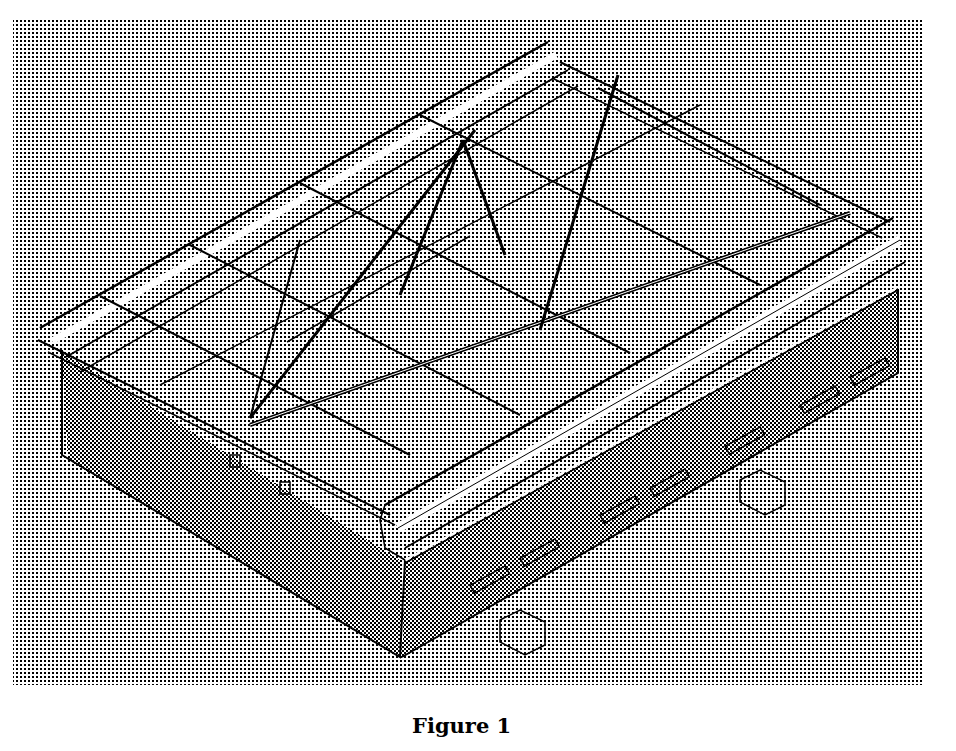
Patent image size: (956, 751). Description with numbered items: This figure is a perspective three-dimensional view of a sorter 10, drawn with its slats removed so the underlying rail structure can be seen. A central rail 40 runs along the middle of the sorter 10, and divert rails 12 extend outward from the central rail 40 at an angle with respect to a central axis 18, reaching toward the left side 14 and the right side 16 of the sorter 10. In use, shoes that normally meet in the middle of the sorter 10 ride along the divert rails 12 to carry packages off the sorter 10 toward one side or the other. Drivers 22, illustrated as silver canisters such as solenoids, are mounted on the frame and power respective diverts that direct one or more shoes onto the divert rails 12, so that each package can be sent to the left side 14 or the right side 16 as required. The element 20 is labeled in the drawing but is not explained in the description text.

The rack assembly 10 is at (108, 118).
The frame members 12 is at (287, 342).
The rear rail 14 is at (290, 182).
The front rail 16 is at (850, 247).
The cross beam 18 is at (745, 150).
The diagonal brace 20 is at (246, 412).
The mounting brackets 22 is at (236, 466).
The support arm 40 is at (651, 187).